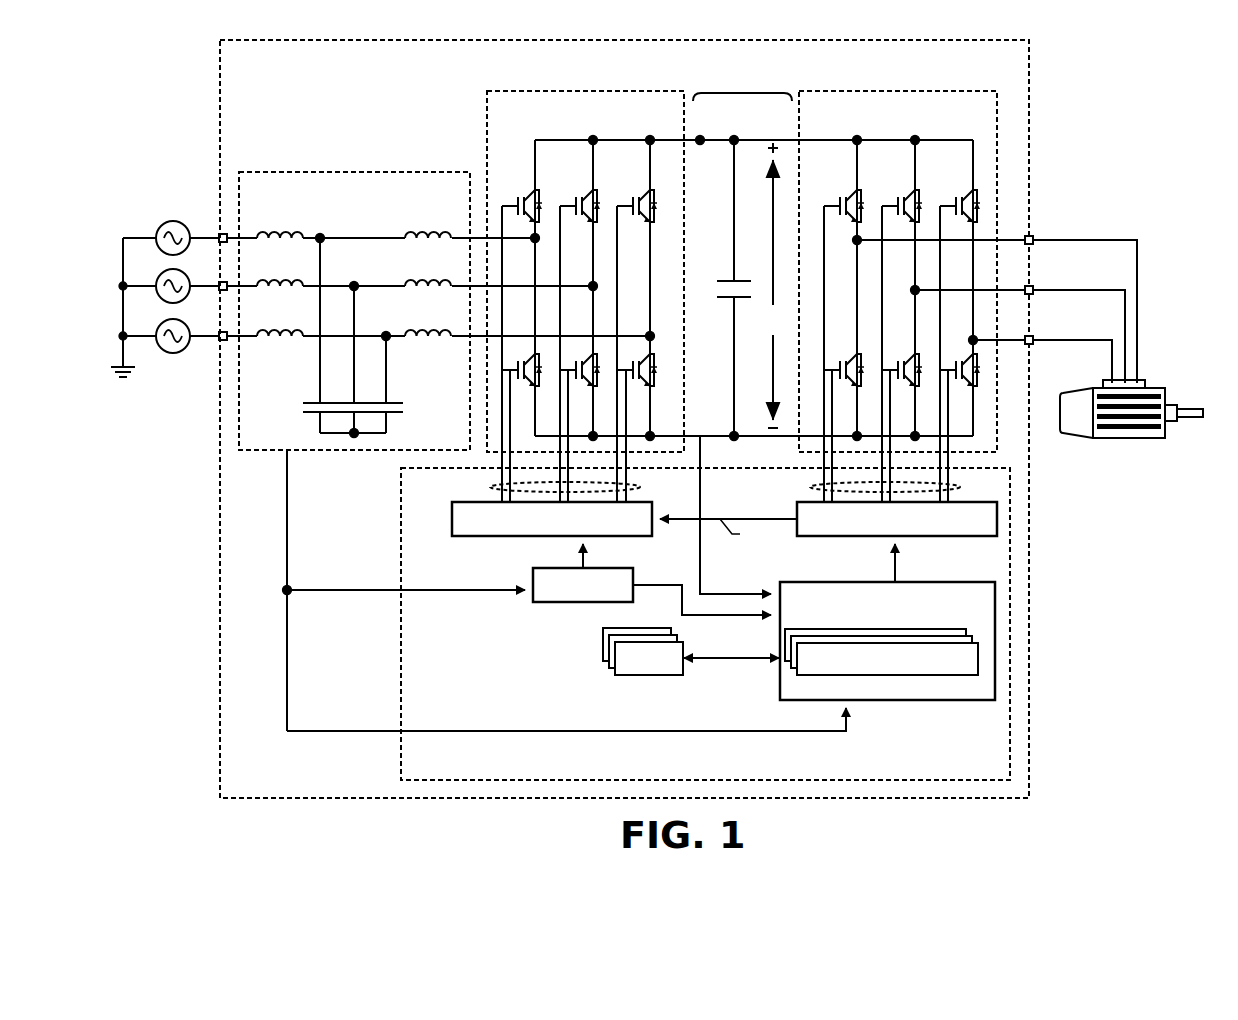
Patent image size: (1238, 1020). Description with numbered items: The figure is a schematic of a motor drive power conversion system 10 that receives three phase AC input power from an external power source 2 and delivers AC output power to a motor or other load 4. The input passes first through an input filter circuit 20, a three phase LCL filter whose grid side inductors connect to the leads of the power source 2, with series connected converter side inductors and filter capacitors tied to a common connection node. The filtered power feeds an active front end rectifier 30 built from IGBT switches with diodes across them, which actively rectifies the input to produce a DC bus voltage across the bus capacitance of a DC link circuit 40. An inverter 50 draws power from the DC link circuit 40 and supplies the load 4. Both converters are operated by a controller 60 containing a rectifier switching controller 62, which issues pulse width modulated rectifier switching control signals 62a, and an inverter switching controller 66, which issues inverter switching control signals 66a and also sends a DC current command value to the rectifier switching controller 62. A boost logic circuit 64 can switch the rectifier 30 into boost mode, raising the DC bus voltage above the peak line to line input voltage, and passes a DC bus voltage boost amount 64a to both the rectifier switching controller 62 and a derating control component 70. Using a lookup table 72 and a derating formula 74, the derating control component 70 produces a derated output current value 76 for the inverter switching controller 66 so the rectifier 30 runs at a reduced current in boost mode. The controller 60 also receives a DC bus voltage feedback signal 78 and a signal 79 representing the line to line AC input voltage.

The power source 2 is at (152, 220).
The load 4 is at (1157, 388).
The motor drive power conversion system 10 is at (291, 38).
The input filter circuit 20 is at (356, 170).
The rectifier 30 is at (586, 89).
The DC link circuit 40 is at (743, 93).
The inverter 50 is at (897, 89).
The controller 60 is at (400, 757).
The rectifier switching controller 62 is at (452, 519).
The rectifier switching control signals 62a is at (488, 488).
The boost logic circuit 64 is at (533, 577).
The DC bus voltage boost amount 64a is at (577, 555).
The inverter switching controller 66 is at (797, 513).
The inverter switching control signals 66a is at (808, 488).
The derating control component 70 is at (862, 581).
The lookup table 72 is at (604, 650).
The derating formula 74 is at (797, 680).
The derated output current value 76 is at (900, 563).
The DC bus voltage feedback signal 78 is at (700, 490).
The AC input voltage signal 79 is at (716, 730).